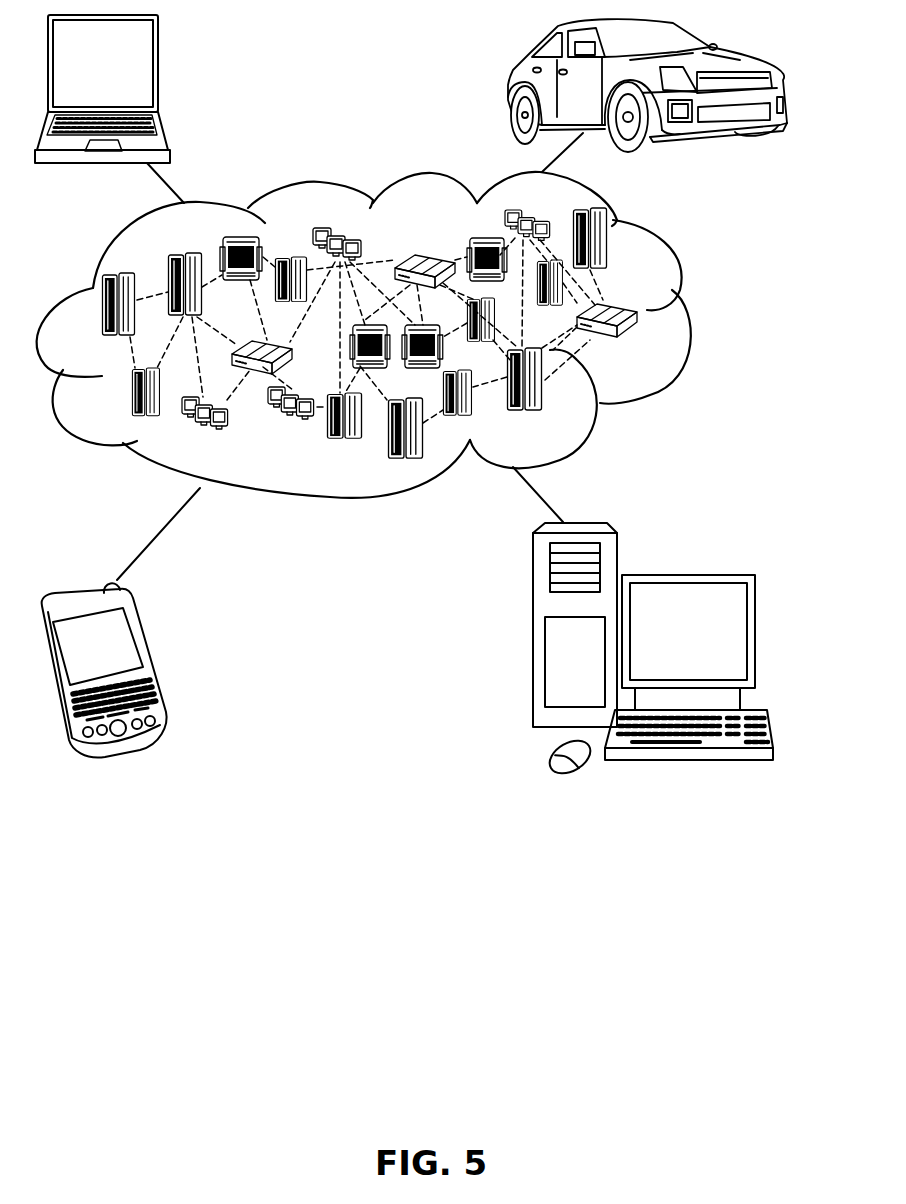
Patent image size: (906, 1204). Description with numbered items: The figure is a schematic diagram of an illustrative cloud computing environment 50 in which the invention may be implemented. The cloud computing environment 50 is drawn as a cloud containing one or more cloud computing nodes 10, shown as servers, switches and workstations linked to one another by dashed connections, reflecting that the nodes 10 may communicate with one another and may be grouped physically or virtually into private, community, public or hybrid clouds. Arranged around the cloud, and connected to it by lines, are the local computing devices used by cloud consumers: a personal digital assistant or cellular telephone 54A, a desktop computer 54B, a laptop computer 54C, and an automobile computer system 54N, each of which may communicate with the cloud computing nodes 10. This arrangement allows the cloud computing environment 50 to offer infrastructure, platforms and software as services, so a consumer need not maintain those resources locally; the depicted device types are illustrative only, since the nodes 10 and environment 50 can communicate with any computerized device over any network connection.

The cloud computing nodes 10 is at (640, 346).
The cloud computing environment 50 is at (685, 317).
The personal digital assistant (PDA) or cellular telephone 54A is at (150, 658).
The desktop computer 54B is at (684, 574).
The laptop computer 54C is at (158, 70).
The automobile computer system 54N is at (512, 82).